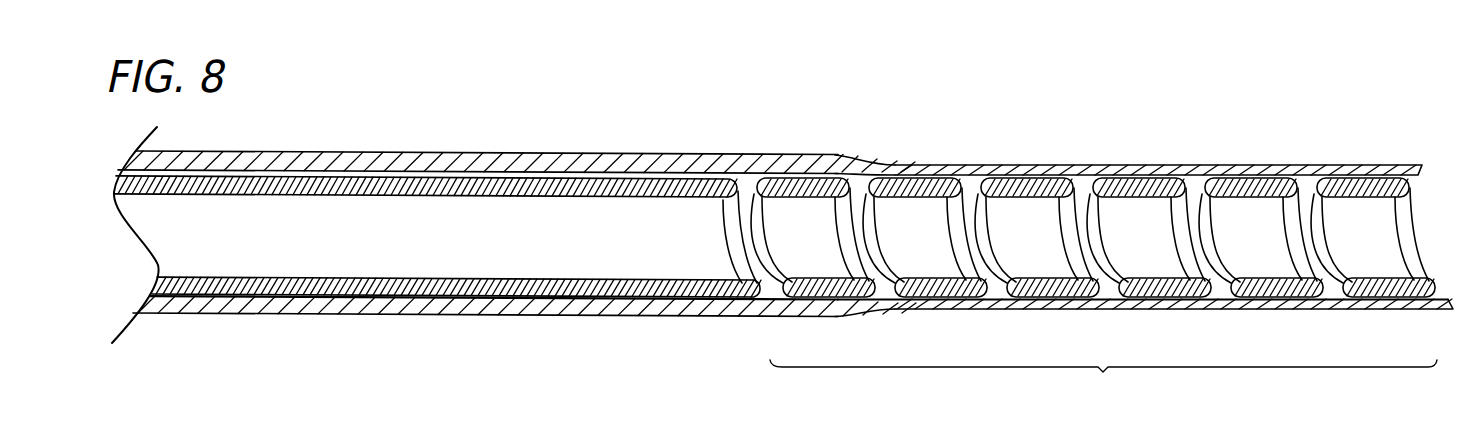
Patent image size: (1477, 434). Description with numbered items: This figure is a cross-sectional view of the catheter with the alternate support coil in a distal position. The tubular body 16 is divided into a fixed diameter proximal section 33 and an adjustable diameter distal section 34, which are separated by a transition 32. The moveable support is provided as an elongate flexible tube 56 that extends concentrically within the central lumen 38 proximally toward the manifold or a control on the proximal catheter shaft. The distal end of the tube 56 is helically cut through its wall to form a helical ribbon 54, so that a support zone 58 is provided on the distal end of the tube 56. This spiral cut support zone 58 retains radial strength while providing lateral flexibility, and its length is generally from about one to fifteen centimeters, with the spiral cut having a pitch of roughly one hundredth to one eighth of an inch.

The tubular body 16 is at (535, 163).
The transition 32 is at (858, 163).
The fixed diameter proximal section 33 is at (481, 94).
The adjustable diameter distal section 34 is at (1149, 73).
The central lumen 38 is at (1435, 229).
The helical ribbon 54 is at (920, 258).
The tube 56 is at (600, 263).
The support zone 58 is at (1103, 382).